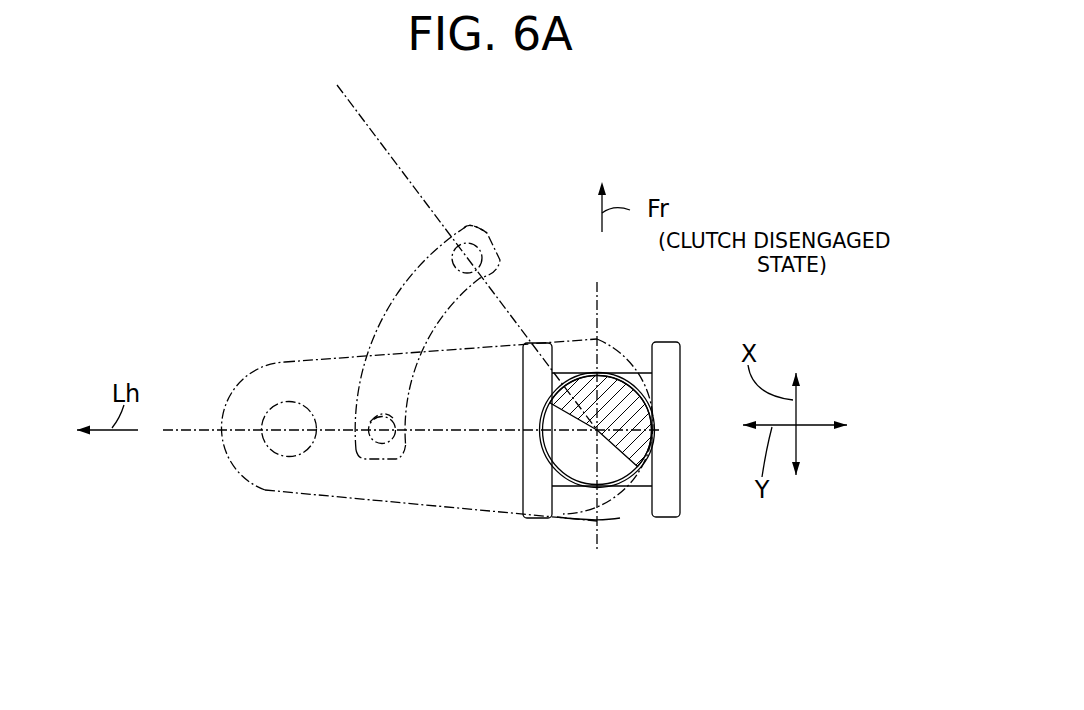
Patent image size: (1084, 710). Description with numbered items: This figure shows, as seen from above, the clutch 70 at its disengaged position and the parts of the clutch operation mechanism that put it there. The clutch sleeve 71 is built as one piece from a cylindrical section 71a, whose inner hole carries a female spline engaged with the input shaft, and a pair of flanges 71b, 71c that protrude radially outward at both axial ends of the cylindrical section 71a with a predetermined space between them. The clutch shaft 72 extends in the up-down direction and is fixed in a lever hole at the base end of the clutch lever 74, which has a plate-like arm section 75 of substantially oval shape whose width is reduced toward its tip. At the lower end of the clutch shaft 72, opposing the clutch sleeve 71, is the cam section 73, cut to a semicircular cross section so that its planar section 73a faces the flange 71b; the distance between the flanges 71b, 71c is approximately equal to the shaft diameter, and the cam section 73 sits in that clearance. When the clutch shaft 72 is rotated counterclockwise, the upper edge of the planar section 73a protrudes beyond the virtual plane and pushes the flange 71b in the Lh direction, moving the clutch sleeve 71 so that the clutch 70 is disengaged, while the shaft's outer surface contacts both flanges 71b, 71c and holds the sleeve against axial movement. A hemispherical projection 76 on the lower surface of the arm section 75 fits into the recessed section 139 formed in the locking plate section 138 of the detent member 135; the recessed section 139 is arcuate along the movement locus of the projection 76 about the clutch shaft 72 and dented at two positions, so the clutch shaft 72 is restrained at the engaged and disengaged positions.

The clutch 70 is at (623, 440).
The clutch sleeve 71 is at (623, 445).
The cylindrical section 71a is at (563, 488).
The flange 71b is at (523, 484).
The flange 71c is at (680, 495).
The clutch shaft 72 is at (590, 392).
The cam section 73 is at (635, 347).
The planar section 73a is at (620, 488).
The clutch lever 74 is at (338, 359).
The arm section 75 is at (318, 496).
The projection 76 is at (390, 410).
The detent member 135 is at (381, 322).
The locking plate section 138 is at (428, 252).
The recessed section 139 is at (487, 230).